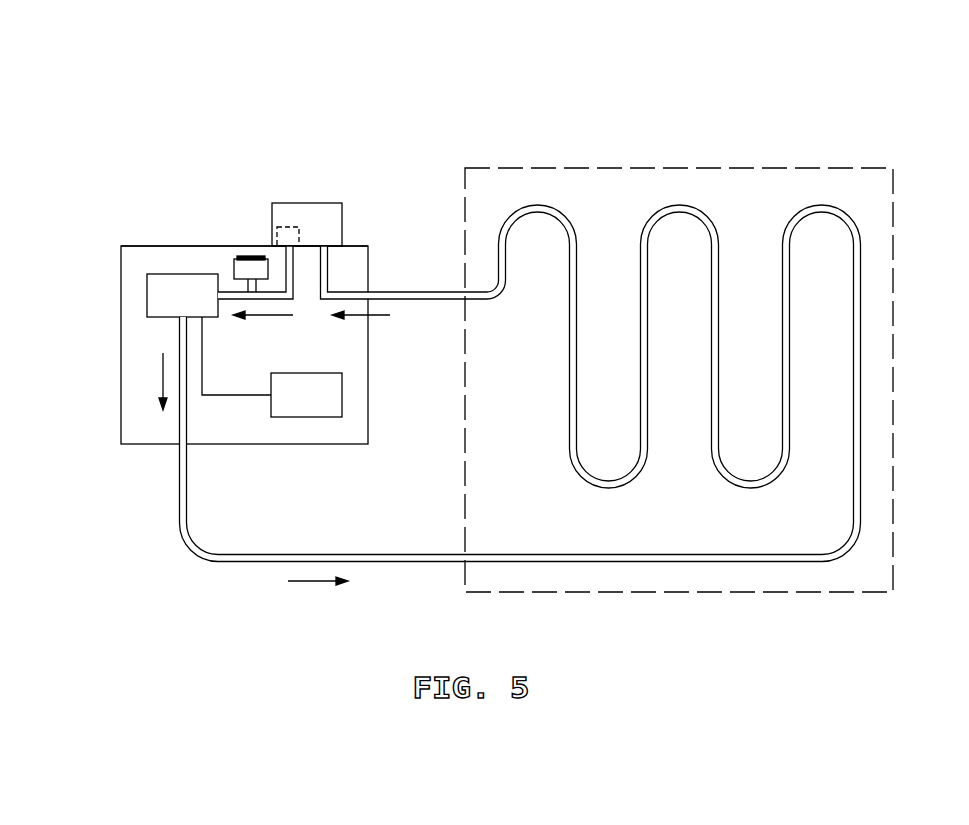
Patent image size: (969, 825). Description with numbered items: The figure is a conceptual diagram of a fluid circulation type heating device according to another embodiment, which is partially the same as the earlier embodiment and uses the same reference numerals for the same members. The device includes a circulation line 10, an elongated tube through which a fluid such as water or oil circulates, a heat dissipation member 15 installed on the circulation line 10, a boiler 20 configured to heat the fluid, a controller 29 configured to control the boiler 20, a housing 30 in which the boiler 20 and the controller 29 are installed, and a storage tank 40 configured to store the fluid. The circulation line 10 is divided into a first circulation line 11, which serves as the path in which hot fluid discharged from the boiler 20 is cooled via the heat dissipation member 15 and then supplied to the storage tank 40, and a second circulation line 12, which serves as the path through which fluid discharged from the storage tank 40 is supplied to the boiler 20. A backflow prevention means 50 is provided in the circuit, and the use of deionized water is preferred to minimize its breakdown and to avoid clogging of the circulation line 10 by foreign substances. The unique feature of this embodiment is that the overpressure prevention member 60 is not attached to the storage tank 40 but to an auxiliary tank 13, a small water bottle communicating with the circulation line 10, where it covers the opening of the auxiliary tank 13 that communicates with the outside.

The circulation line 10 is at (520, 302).
The first circulation line 11 is at (435, 88).
The second circulation line 12 is at (288, 270).
The auxiliary tank 13 is at (240, 270).
The heat dissipation member 15 is at (805, 168).
The boiler 20 is at (147, 292).
The controller 29 is at (305, 417).
The housing 30 is at (121, 343).
The storage tank 40 is at (310, 203).
The backflow prevention means 50 is at (289, 227).
The overpressure prevention member 60 is at (250, 257).